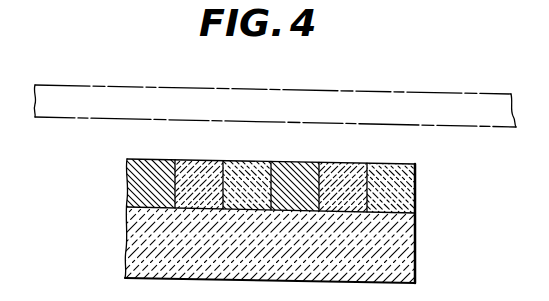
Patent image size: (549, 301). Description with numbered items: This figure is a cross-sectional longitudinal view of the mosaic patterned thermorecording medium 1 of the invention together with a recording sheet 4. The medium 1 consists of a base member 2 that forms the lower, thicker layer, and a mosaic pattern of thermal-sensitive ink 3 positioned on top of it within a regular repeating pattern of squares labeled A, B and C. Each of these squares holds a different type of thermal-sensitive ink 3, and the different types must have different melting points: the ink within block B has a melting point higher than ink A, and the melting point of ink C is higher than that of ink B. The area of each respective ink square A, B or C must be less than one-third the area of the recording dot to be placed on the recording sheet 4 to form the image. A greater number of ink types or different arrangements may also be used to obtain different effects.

The thermal recording medium 1 is at (275, 221).
The base member 2 is at (474, 192).
The thermal-sensitive ink 3 is at (406, 193).
The recording sheet 4 is at (476, 100).